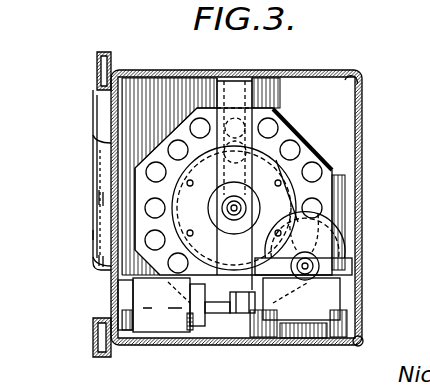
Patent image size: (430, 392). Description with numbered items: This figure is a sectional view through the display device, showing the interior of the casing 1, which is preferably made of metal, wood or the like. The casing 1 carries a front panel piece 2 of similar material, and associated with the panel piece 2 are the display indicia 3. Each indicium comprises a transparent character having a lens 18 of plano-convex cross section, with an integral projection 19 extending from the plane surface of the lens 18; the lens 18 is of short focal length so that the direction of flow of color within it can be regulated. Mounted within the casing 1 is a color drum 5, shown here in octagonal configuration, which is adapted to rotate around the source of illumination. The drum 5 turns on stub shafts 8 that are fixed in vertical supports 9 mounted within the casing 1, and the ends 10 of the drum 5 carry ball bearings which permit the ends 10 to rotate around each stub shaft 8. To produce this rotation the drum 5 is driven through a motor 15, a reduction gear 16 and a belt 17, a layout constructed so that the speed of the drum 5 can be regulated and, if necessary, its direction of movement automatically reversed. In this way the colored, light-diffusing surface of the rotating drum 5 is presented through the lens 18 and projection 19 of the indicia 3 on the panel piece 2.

The casing 1 is at (307, 72).
The front panel piece 2 is at (112, 110).
The display indicia 3 is at (90, 176).
The color drum 5 is at (334, 158).
The stub shaft 8 is at (307, 165).
The vertical supports 9 is at (249, 103).
The ends 10 is at (237, 206).
The motor 15 is at (167, 320).
The reduction gear 16 is at (308, 303).
The belt 17 is at (295, 215).
The lens 18 is at (94, 222).
The integral projection 19 is at (110, 238).